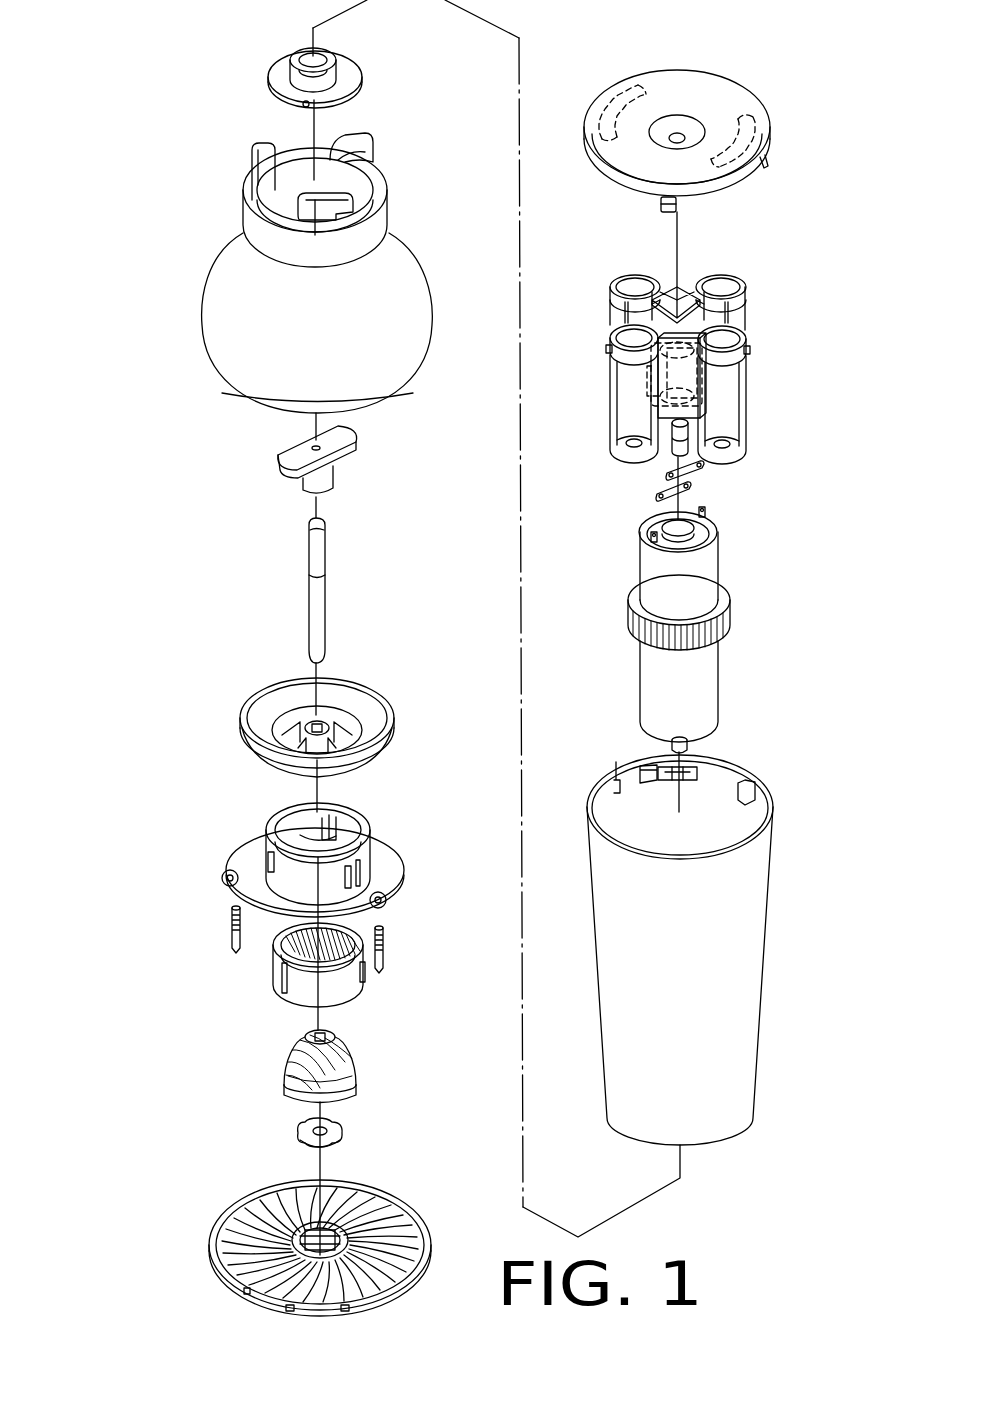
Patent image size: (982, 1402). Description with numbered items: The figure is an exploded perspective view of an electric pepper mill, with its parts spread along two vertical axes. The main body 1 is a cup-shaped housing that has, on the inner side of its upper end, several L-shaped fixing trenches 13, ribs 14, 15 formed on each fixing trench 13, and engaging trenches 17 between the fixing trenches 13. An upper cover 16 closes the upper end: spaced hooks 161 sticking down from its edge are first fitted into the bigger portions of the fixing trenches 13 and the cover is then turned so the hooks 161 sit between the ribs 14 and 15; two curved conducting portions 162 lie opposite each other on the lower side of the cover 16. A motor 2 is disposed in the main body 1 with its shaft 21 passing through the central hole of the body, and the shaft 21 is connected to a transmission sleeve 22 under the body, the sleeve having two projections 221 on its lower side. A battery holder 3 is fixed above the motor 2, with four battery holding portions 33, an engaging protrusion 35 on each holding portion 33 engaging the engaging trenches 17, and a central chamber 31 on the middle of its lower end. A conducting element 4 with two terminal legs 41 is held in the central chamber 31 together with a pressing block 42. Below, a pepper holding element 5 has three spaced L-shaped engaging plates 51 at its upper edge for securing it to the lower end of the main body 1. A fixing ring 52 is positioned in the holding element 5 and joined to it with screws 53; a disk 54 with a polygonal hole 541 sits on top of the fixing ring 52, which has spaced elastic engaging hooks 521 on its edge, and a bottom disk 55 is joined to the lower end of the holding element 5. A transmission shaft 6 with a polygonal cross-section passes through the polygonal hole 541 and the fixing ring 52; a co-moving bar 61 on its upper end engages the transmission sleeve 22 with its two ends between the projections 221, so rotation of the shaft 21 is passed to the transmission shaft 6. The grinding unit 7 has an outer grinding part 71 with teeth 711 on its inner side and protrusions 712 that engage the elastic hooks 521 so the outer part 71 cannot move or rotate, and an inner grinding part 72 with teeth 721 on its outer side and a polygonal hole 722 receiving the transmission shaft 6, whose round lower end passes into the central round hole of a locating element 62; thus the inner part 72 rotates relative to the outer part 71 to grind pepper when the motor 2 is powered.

The main body 1 is at (717, 912).
The L-shaped fixing trench 13 is at (644, 770).
The rib 14 is at (663, 768).
The rib 15 is at (747, 764).
The upper cover 16 is at (703, 122).
The hook 161 is at (677, 206).
The curved conducting portion 162 is at (607, 100).
The engaging trench 17 is at (740, 790).
The motor 2 is at (718, 630).
The shaft 21 is at (684, 741).
The transmission sleeve 22 is at (314, 68).
The projection 221 is at (306, 105).
The battery holder 3 is at (692, 369).
The central chamber 31 is at (633, 377).
The battery holding portion 33 is at (688, 443).
The engaging protrusion 35 is at (740, 355).
The conducting element 4 is at (739, 496).
The terminal leg 41 is at (688, 484).
The pressing block 42 is at (700, 464).
The pepper holding element 5 is at (217, 303).
The L-shaped engaging plate 51 is at (350, 205).
The fixing ring 52 is at (327, 848).
The elastic engaging hook 521 is at (318, 828).
The screw 53 is at (230, 935).
The disk 54 is at (341, 695).
The polygonal hole 541 is at (313, 722).
The bottom disk 55 is at (252, 1300).
The transmission shaft 6 is at (325, 587).
The co-moving bar 61 is at (347, 455).
The locating element 62 is at (312, 1148).
The grinding unit 7 is at (325, 1027).
The outer grinding part 71 is at (300, 982).
The teeth 711 is at (312, 958).
The protrusion 712 is at (300, 960).
The inner grinding part 72 is at (297, 1080).
The teeth 721 is at (288, 1083).
The polygonal hole 722 is at (305, 1032).